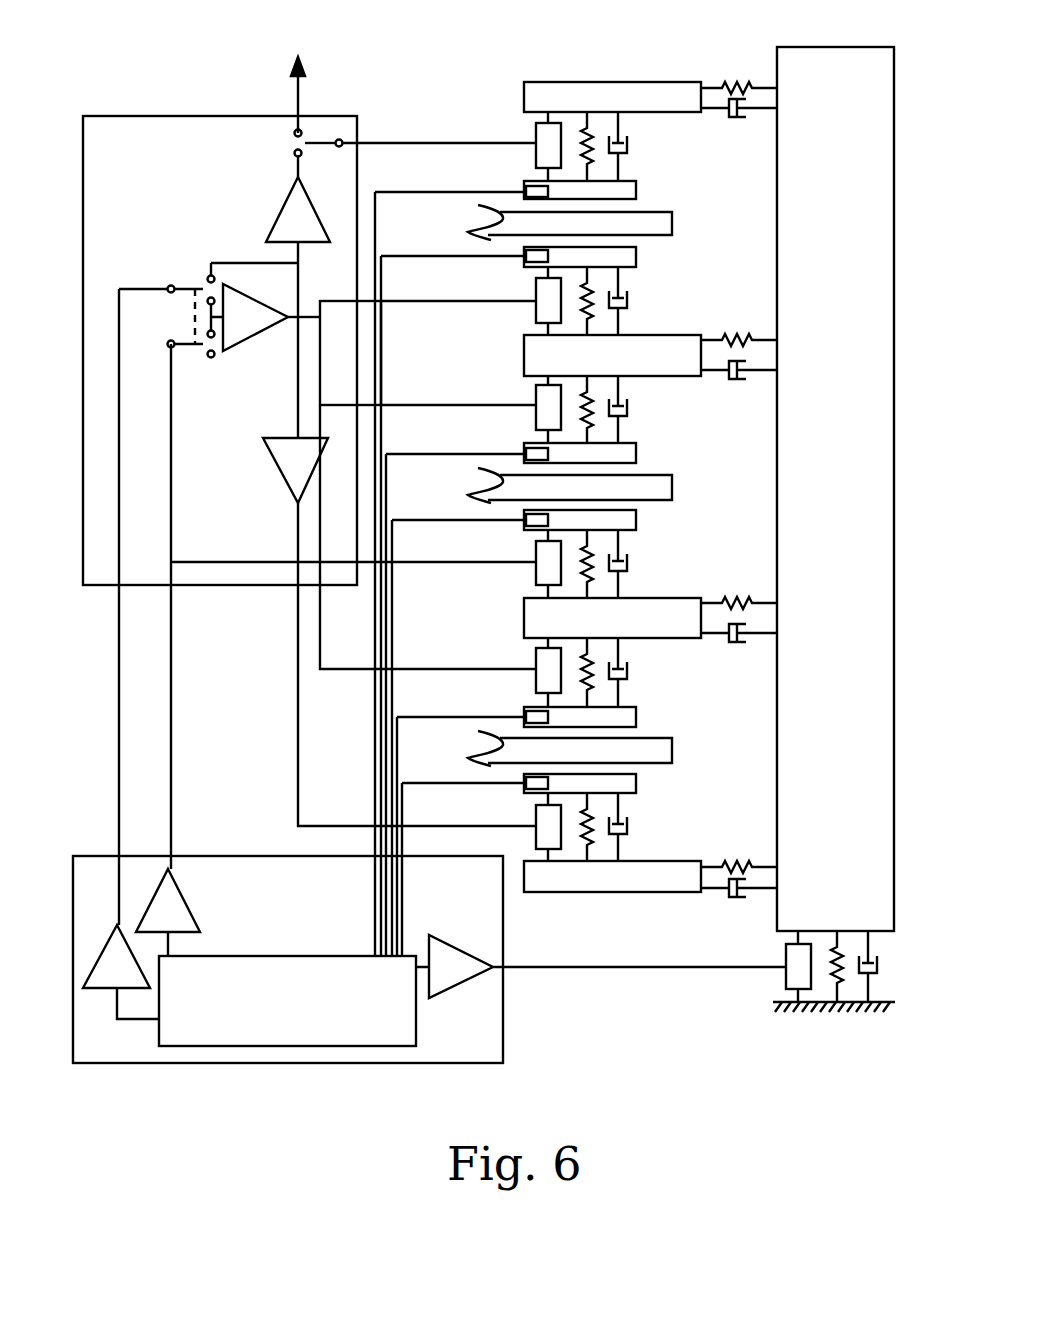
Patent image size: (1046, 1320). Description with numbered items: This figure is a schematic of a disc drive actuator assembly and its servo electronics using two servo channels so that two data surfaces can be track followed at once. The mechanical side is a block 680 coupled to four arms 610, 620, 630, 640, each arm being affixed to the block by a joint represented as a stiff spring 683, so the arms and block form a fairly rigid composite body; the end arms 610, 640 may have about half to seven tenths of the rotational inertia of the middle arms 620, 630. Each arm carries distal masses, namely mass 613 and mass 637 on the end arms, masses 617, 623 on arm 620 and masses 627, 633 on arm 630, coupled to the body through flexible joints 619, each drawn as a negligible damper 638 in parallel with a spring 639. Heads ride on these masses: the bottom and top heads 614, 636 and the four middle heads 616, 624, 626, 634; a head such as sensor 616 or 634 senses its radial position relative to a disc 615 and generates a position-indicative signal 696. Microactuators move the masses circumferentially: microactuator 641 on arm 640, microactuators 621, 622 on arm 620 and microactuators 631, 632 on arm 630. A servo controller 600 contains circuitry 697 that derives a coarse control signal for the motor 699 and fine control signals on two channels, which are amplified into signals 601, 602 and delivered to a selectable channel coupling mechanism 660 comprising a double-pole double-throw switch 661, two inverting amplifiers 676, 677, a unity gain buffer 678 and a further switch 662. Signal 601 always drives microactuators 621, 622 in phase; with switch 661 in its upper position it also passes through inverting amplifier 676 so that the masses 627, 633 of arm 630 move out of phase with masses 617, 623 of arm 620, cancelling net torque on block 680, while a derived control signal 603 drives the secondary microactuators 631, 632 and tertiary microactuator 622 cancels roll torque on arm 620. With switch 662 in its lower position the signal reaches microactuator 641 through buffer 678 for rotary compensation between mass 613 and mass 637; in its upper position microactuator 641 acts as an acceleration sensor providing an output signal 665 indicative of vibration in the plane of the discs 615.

The servo controller 600 is at (296, 903).
The amplified control signal 601 is at (171, 793).
The amplified control signal 602 is at (119, 752).
The control signal 603 is at (407, 302).
The arm 610 is at (640, 883).
The mass 613 is at (628, 783).
The head 614 is at (524, 781).
The disc 615 is at (660, 753).
The head 616 is at (525, 717).
The mass 617 is at (628, 713).
The joint 619 is at (592, 662).
The arm 620 is at (631, 631).
The microactuator 621 is at (543, 665).
The microactuator 622 is at (538, 574).
The mass 623 is at (628, 518).
The head 624 is at (522, 517).
The head 626 is at (523, 455).
The mass 627 is at (628, 452).
The arm 630 is at (634, 367).
The microactuator 631 is at (542, 398).
The microactuator 632 is at (543, 309).
The mass 633 is at (630, 255).
The head 634 is at (523, 256).
The head 636 is at (523, 188).
The mass 637 is at (630, 186).
The damper 638 is at (628, 149).
The spring 639 is at (580, 132).
The arm 640 is at (630, 92).
The microactuator 641 is at (537, 135).
The selectable channel coupling mechanism 660 is at (155, 169).
The double-pole double-throw switch 661 is at (188, 272).
The switch 662 is at (288, 136).
The output signal 665 is at (298, 83).
The inverting amplifier 676 is at (274, 320).
The inverting amplifier 677 is at (292, 478).
The unity gain buffer 678 is at (295, 198).
The block 680 is at (849, 615).
The stiff spring 683 is at (731, 336).
The position-indicative signal 696 is at (403, 872).
The circuit 697 is at (252, 1032).
The motor 699 is at (793, 978).